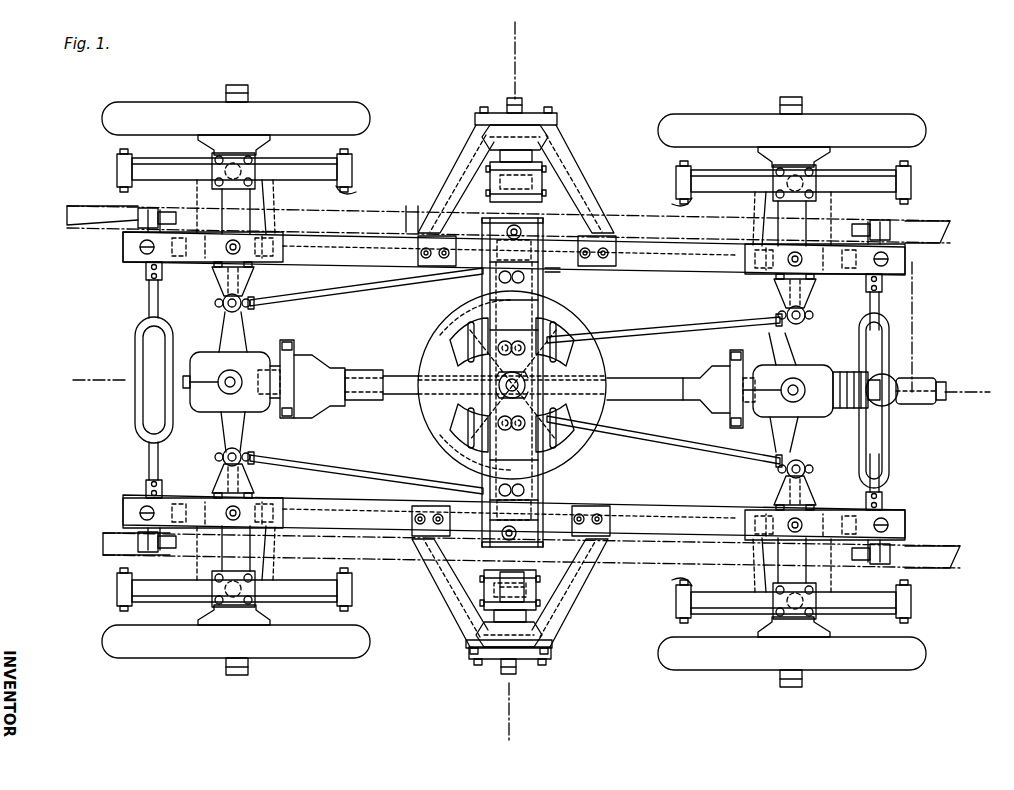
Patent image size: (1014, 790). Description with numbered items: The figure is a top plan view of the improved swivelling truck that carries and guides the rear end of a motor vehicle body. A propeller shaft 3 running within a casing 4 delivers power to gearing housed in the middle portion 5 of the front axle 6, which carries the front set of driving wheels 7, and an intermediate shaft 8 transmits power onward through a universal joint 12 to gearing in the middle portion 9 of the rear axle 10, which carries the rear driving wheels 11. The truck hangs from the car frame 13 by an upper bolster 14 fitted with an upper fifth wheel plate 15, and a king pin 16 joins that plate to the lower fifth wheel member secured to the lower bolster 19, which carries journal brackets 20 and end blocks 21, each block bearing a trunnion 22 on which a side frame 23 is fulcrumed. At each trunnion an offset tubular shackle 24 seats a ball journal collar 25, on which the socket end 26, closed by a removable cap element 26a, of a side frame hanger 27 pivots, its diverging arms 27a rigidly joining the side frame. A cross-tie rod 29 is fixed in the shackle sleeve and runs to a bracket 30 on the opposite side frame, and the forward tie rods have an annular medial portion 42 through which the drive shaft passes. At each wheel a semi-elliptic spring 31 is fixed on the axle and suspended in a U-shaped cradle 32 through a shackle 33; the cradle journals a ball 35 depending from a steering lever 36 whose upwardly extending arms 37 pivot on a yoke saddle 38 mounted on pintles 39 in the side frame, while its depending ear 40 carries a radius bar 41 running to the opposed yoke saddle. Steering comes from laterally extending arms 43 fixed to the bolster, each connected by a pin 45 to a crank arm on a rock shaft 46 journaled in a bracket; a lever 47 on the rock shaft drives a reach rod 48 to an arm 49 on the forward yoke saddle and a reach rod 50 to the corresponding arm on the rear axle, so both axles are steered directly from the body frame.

The propeller shaft 3 is at (93, 381).
The casing 4 is at (522, 40).
The middle portion of the front axle 5 is at (797, 22).
The front axle 6 is at (783, 392).
The front driving wheels 7 is at (725, 112).
The intermediate shaft 8 is at (628, 374).
The middle portion of the rear axle 9 is at (260, 362).
The rear axle 10 is at (237, 335).
The rear driving wheels 11 is at (307, 100).
The universal joint 12 is at (367, 372).
The car frame 13 is at (418, 216).
The upper bolster 14 is at (545, 328).
The upper fifth wheel plate 15 is at (575, 331).
The king pin 16 is at (478, 420).
The lower bolster 19 is at (540, 597).
The journal brackets 20 is at (485, 313).
The end blocks 21 is at (537, 172).
The trunnion 22 is at (517, 97).
The side frame 23 is at (653, 247).
The offset tubular shackle 24 is at (533, 157).
The ball journal collar 25 is at (545, 136).
The socket end 26 is at (470, 660).
The removable cap element 26a is at (468, 699).
The side frame hanger 27 is at (584, 178).
The diverging arms 27a is at (587, 206).
The cross-tie rod 29 is at (557, 290).
The bracket 30 is at (560, 270).
The semi-elliptic spring 31 is at (332, 166).
The U-shaped cradle 32 is at (352, 192).
The shackle 33 is at (117, 167).
The ball 35 is at (255, 172).
The steering lever 36 is at (263, 193).
The upwardly extending arms 37 is at (818, 190).
The yoke saddle 38 is at (288, 250).
The pintles 39 is at (230, 252).
The depending ear 40 is at (138, 220).
The radius bar 41 is at (140, 426).
The annular medial portion 42 is at (853, 447).
The laterally extending arms 43 is at (483, 281).
The pin 45 is at (542, 228).
The rock shaft 46 is at (483, 333).
The lever 47 is at (565, 364).
The reach rod 48 is at (673, 327).
The arm 49 is at (250, 290).
The reach rod 50 is at (360, 287).